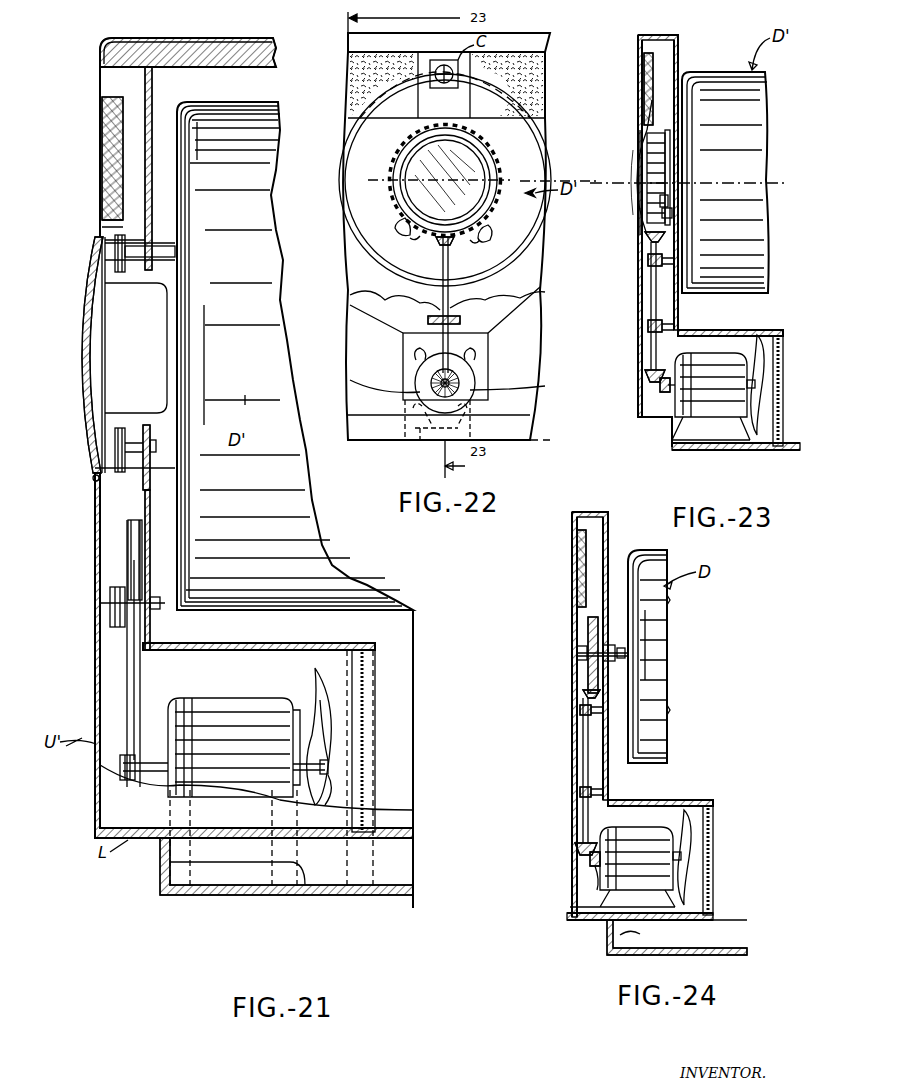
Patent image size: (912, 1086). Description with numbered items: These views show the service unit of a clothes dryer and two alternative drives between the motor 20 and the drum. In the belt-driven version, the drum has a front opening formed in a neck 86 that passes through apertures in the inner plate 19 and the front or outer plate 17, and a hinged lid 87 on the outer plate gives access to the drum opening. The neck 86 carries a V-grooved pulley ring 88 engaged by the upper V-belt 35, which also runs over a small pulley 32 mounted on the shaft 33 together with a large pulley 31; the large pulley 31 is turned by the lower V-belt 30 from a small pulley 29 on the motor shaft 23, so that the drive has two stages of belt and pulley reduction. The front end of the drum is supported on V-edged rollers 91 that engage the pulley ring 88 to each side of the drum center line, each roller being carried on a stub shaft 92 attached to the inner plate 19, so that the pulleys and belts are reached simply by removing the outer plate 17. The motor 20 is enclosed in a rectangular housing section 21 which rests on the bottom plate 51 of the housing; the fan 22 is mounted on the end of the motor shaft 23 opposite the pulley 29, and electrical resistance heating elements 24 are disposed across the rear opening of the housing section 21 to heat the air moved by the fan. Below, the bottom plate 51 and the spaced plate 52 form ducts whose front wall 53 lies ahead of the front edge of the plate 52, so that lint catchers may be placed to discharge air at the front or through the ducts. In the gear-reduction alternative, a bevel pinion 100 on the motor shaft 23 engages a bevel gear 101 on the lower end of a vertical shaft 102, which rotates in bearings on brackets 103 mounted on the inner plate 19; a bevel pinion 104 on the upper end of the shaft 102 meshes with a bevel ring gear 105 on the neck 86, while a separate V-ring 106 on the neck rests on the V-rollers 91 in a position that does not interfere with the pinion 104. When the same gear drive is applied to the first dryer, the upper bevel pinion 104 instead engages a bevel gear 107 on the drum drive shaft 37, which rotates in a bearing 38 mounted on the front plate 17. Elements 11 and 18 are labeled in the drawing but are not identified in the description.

In FIG. 21, the top wall 11 is at (225, 38).
In FIG. 21, the front plate 17 is at (97, 500).
In FIG. 23, the front plate 17 is at (642, 90).
In FIG. 24, the front plate 17 is at (574, 618).
In FIG. 21, the insulation 18 is at (102, 150).
In FIG. 22, the insulation 18 is at (540, 72).
In FIG. 24, the insulation 18 is at (576, 560).
In FIG. 21, the inner plate 19 is at (150, 498).
In FIG. 22, the inner plate 19 is at (532, 275).
In FIG. 23, the inner plate 19 is at (679, 308).
In FIG. 24, the inner plate 19 is at (605, 784).
In FIG. 21, the motor 20 is at (232, 698).
In FIG. 23, the motor 20 is at (698, 360).
In FIG. 24, the motor 20 is at (630, 827).
In FIG. 21, the rectangular housing section 21 is at (272, 676).
In FIG. 23, the rectangular housing section 21 is at (755, 330).
In FIG. 24, the rectangular housing section 21 is at (682, 800).
In FIG. 21, the fan 22 is at (313, 672).
In FIG. 23, the fan 22 is at (752, 360).
In FIG. 24, the fan 22 is at (688, 822).
In FIG. 21, the motor shaft 23 is at (322, 756).
In FIG. 23, the motor shaft 23 is at (678, 390).
In FIG. 24, the motor shaft 23 is at (597, 882).
In FIG. 21, the electrical resistance heating elements 24 is at (375, 678).
In FIG. 23, the electrical resistance heating elements 24 is at (783, 356).
In FIG. 24, the electrical resistance heating elements 24 is at (713, 852).
In FIG. 21, the small pulley 29 is at (128, 782).
In FIG. 21, the lower V-belt 30 is at (137, 700).
In FIG. 21, the large pulley 31 is at (142, 665).
In FIG. 21, the small pulley 32 is at (115, 630).
In FIG. 21, the shaft 33 is at (150, 615).
In FIG. 21, the upper V-belt 35 is at (118, 222).
In FIG. 24, the drum drive shaft 37 is at (598, 638).
In FIG. 24, the bearing 38 is at (577, 650).
In FIG. 21, the bottom plate 51 is at (370, 895).
In FIG. 24, the bottom plate 51 is at (740, 950).
In FIG. 21, the spaced plate 52 is at (378, 842).
In FIG. 24, the spaced plate 52 is at (735, 928).
In FIG. 21, the front wall 53 is at (162, 876).
In FIG. 24, the front wall 53 is at (625, 936).
In FIG. 21, the neck 86 is at (165, 285).
In FIG. 22, the neck 86 is at (480, 170).
In FIG. 23, the neck 86 is at (665, 156).
In FIG. 21, the hinged lid 87 is at (80, 392).
In FIG. 21, the V-grooved pulley ring 88 is at (124, 275).
In FIG. 21, the V-edged rollers 91 is at (140, 440).
In FIG. 22, the V-edged rollers 91 is at (490, 240).
In FIG. 23, the V-edged rollers 91 is at (670, 200).
In FIG. 21, the stub shaft 92 is at (153, 440).
In FIG. 23, the stub shaft 92 is at (674, 212).
In FIG. 22, the bevel pinion 100 is at (432, 383).
In FIG. 23, the bevel pinion 100 is at (658, 390).
In FIG. 24, the bevel pinion 100 is at (590, 862).
In FIG. 22, the bevel gear 101 is at (449, 365).
In FIG. 23, the bevel gear 101 is at (648, 378).
In FIG. 24, the bevel gear 101 is at (576, 848).
In FIG. 22, the vertical shaft 102 is at (450, 270).
In FIG. 23, the vertical shaft 102 is at (651, 268).
In FIG. 24, the vertical shaft 102 is at (583, 748).
In FIG. 22, the brackets 103 is at (462, 315).
In FIG. 23, the brackets 103 is at (670, 260).
In FIG. 24, the brackets 103 is at (580, 708).
In FIG. 22, the bevel pinion 104 is at (438, 240).
In FIG. 23, the bevel pinion 104 is at (648, 236).
In FIG. 24, the bevel pinion 104 is at (586, 690).
In FIG. 22, the bevel ring gear 105 is at (495, 218).
In FIG. 23, the bevel ring gear 105 is at (652, 130).
In FIG. 23, the V-ring 106 is at (670, 168).
In FIG. 24, the bevel gear 107 is at (600, 663).